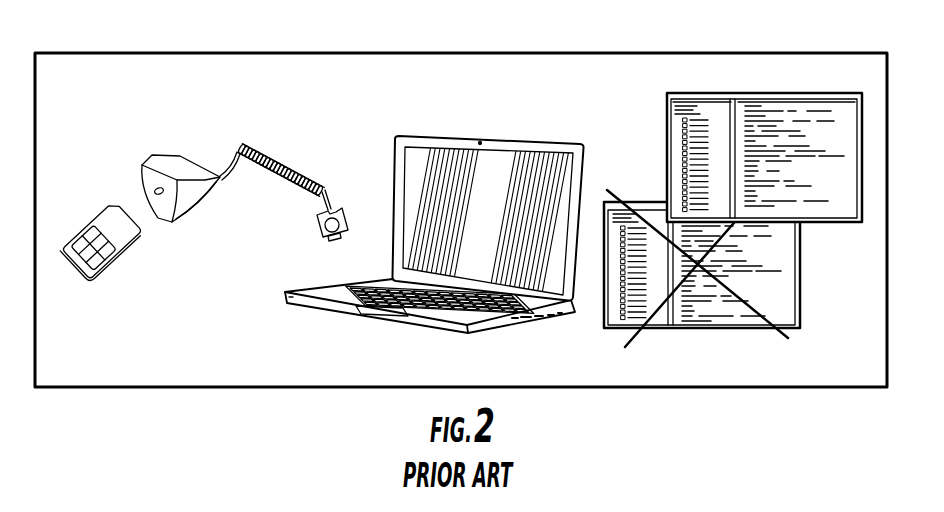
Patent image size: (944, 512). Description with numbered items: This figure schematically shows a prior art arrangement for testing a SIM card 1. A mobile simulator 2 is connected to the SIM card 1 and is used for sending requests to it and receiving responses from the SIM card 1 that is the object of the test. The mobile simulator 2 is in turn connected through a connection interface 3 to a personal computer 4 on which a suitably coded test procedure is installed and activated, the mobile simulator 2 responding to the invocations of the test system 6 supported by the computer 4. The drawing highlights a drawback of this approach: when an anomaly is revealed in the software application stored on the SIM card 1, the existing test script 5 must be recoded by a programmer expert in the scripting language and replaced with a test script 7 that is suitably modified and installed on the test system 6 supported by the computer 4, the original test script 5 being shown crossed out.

The SIM card 1 is at (101, 235).
The mobile simulator 2 is at (233, 167).
The connection interface 3 is at (332, 205).
The personal computer 4 is at (434, 220).
The test script 5 is at (711, 265).
The test system 6 is at (733, 282).
The modified test script 7 is at (764, 140).